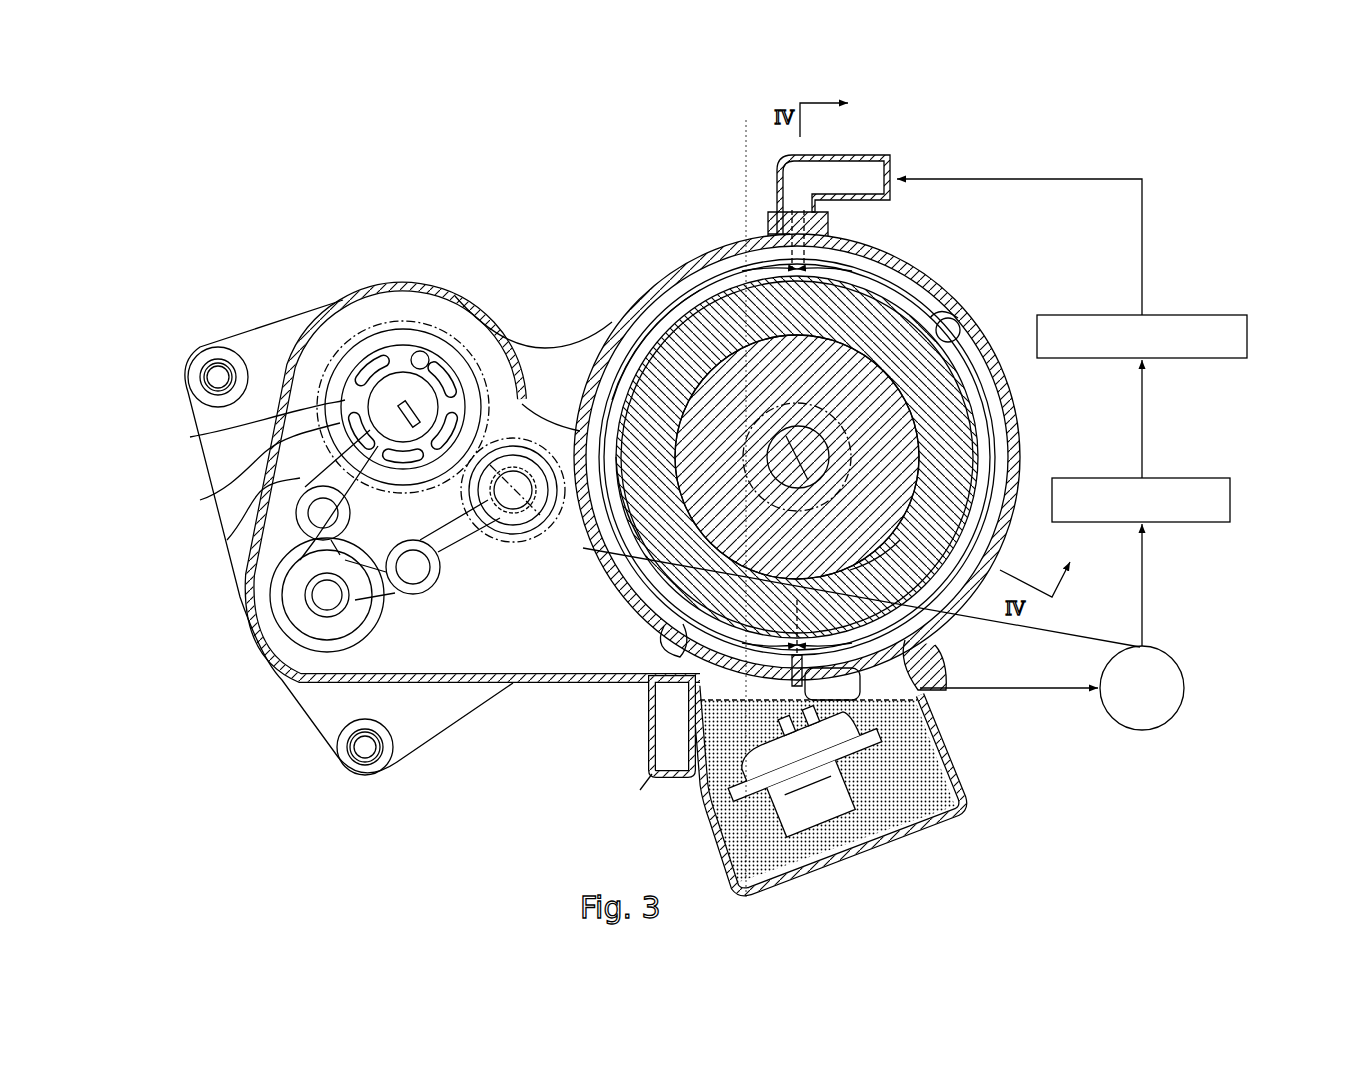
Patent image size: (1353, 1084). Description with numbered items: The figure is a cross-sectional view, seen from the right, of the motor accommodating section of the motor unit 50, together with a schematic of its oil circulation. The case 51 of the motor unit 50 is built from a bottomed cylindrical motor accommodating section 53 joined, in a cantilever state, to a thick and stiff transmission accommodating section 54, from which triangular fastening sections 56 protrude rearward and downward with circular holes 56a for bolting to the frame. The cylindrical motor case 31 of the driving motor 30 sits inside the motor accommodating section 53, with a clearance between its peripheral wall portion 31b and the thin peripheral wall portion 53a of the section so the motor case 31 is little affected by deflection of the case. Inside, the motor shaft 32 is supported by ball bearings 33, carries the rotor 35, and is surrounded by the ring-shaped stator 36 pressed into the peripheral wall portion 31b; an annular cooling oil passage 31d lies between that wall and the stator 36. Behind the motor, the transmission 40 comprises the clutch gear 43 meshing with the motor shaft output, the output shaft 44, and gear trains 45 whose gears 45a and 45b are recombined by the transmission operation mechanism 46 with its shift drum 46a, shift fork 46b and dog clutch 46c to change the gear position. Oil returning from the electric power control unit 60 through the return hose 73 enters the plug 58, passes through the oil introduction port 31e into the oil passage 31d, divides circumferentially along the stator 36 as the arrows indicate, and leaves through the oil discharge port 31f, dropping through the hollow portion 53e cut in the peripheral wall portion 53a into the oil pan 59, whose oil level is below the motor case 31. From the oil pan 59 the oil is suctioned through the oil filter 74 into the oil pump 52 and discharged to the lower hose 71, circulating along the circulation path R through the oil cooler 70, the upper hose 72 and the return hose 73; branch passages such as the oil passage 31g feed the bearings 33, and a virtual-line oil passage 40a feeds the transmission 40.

The driving motor 30 is at (834, 472).
The motor case 31 is at (706, 258).
The peripheral wall portion 31b is at (952, 320).
The cooling oil passage 31d is at (962, 335).
The oil introduction port 31e is at (826, 242).
The oil discharge port 31f is at (786, 650).
The oil passage 31g is at (752, 448).
The motor shaft 32 is at (920, 505).
The ball bearings 33 is at (812, 396).
The rotor 35 is at (920, 420).
The stator 36 is at (985, 467).
The transmission 40 is at (377, 478).
The oil passage 40a is at (562, 548).
The clutch gear 43 is at (520, 545).
The output shaft 44 is at (345, 398).
The gear trains 45 is at (403, 309).
The gear 45a is at (404, 321).
The gear 45b is at (470, 303).
The transmission operation mechanism 46 is at (247, 564).
The shift drum 46a is at (272, 594).
The shift fork 46b is at (300, 500).
The dog clutch 46c is at (303, 495).
The motor unit 50 is at (256, 180).
The case 51 is at (558, 340).
The oil pump 52 is at (1184, 688).
The motor accommodating section 53 is at (688, 282).
The peripheral wall portion 53a is at (655, 300).
The hollow portion 53e is at (678, 652).
The transmission accommodating section 54 is at (346, 290).
The fastening sections 56 is at (226, 356).
The circular holes 56a is at (214, 368).
The plug 58 is at (776, 186).
The oil pan 59 is at (950, 762).
The electric power control unit 60 is at (1247, 336).
The oil cooler 70 is at (1230, 500).
The lower hose 71 is at (1142, 590).
The upper hose 72 is at (1142, 430).
The return hose 73 is at (1142, 265).
The oil filter 74 is at (862, 792).
The circulation path R is at (1152, 202).